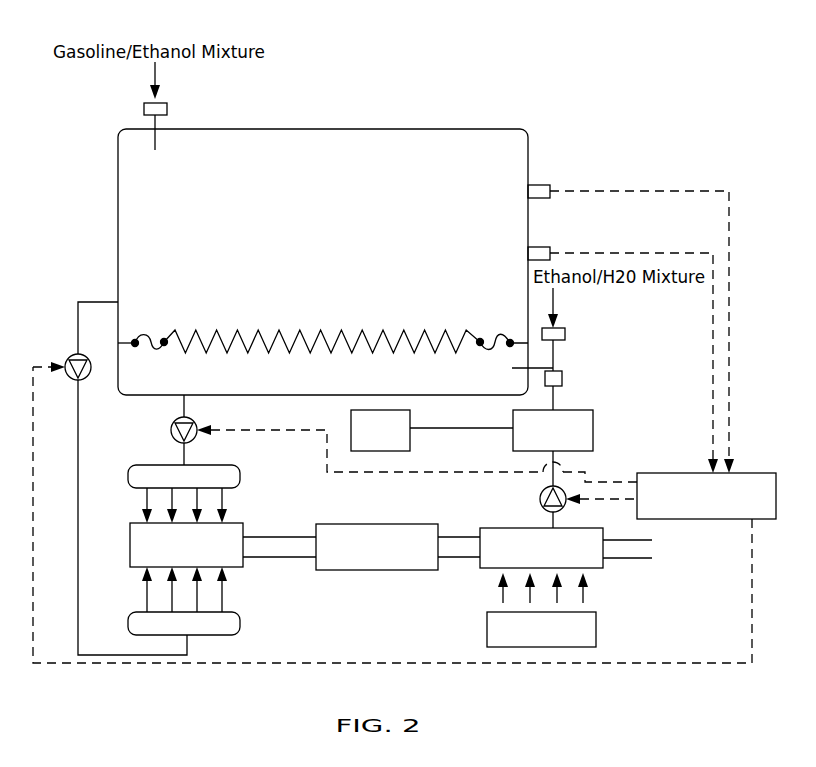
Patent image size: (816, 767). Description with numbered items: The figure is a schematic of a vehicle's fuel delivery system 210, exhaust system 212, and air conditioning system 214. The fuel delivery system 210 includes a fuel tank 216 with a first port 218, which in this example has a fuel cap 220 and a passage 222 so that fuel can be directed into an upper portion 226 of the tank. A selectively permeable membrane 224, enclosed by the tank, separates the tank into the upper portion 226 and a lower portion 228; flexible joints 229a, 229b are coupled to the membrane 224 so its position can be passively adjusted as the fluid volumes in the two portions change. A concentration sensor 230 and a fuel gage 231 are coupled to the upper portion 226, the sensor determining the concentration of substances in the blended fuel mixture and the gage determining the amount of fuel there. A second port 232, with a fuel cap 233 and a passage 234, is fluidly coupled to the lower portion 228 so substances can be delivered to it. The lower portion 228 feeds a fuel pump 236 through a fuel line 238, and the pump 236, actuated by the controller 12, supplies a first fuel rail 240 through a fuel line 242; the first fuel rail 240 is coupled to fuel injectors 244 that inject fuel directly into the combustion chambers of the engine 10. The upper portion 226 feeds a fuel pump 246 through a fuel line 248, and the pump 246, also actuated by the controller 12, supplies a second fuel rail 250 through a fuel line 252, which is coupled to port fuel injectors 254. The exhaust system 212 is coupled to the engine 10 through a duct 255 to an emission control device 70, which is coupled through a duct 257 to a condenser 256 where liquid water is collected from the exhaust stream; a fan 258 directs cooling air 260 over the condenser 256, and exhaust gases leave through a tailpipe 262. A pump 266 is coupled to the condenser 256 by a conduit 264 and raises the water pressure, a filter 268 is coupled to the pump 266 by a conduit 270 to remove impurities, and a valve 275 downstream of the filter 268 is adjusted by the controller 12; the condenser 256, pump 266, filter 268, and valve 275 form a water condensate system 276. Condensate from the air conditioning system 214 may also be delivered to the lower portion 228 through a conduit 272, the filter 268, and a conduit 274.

The fuel delivery system 210 is at (322, 66).
The fuel tank 216 is at (442, 129).
The first port 218 is at (185, 87).
The fuel cap 220 is at (144, 109).
The passage 222 is at (157, 134).
The upper portion 226 is at (329, 221).
The lower portion 228 is at (337, 381).
The selectively permeable membrane 224 is at (337, 335).
The flexible joint 229a is at (144, 333).
The flexible joint 229b is at (488, 332).
The concentration sensor 230 is at (539, 185).
The fuel gage 231 is at (539, 247).
The second port 232 is at (590, 313).
The fuel cap 233 is at (565, 334).
The passage 234 is at (554, 357).
The valve 275 is at (563, 378).
The conduit 274 is at (554, 397).
The air conditioning system 214 is at (411, 424).
The conduit 272 is at (470, 429).
The filter 268 is at (594, 432).
The water condensate system 276 is at (622, 454).
The controller 12 is at (745, 473).
The conduit 270 is at (553, 484).
The pump 266 is at (541, 500).
The conduit 264 is at (556, 515).
The condenser 256 is at (527, 528).
The tailpipe 262 is at (605, 540).
The cooling air 260 is at (609, 588).
The fan 258 is at (596, 633).
The duct 257 is at (443, 536).
The emission control device 70 is at (362, 524).
The duct 255 is at (255, 537).
The engine 10 is at (130, 548).
The fuel injectors 244 is at (255, 502).
The port fuel injectors 254 is at (256, 593).
The first fuel rail 240 is at (240, 482).
The second fuel rail 250 is at (240, 628).
The fuel line 238 is at (182, 402).
The fuel pump 236 is at (171, 430).
The fuel line 242 is at (185, 463).
The fuel line 248 is at (98, 301).
The fuel pump 246 is at (68, 357).
The fuel line 252 is at (78, 599).
The exhaust system 212 is at (372, 620).